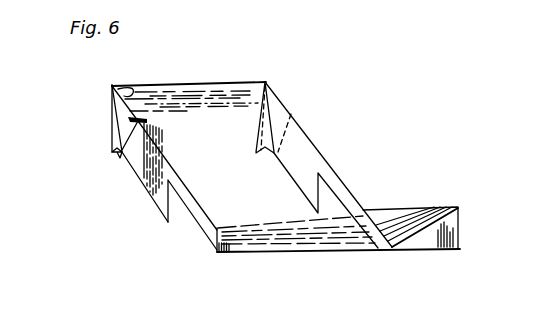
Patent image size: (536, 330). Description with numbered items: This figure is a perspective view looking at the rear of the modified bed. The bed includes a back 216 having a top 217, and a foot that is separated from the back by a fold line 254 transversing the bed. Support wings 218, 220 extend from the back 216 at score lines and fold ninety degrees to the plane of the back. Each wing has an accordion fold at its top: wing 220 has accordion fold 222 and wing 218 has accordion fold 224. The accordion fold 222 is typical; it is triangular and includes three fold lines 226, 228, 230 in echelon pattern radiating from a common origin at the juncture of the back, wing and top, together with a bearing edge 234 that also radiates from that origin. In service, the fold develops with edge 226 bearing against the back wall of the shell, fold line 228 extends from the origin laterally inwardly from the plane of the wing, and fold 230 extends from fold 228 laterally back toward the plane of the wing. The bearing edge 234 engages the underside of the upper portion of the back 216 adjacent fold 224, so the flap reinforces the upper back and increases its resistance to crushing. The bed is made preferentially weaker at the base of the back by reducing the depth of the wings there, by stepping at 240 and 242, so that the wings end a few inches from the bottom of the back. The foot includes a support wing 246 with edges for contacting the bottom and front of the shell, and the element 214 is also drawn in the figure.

The end portion 214 is at (428, 208).
The back 216 is at (216, 243).
The top 217 is at (203, 83).
The support wing 218 is at (147, 178).
The support wing 220 is at (312, 142).
The accordion fold 222 is at (268, 85).
The accordion fold 224 is at (165, 159).
The fold line 226 is at (112, 111).
The fold line 228 is at (121, 120).
The fold line 230 is at (114, 153).
The bearing edge 234 is at (111, 89).
The step 240 is at (202, 214).
The step 242 is at (352, 196).
The support wing 246 is at (442, 249).
The fold line 254 is at (301, 251).